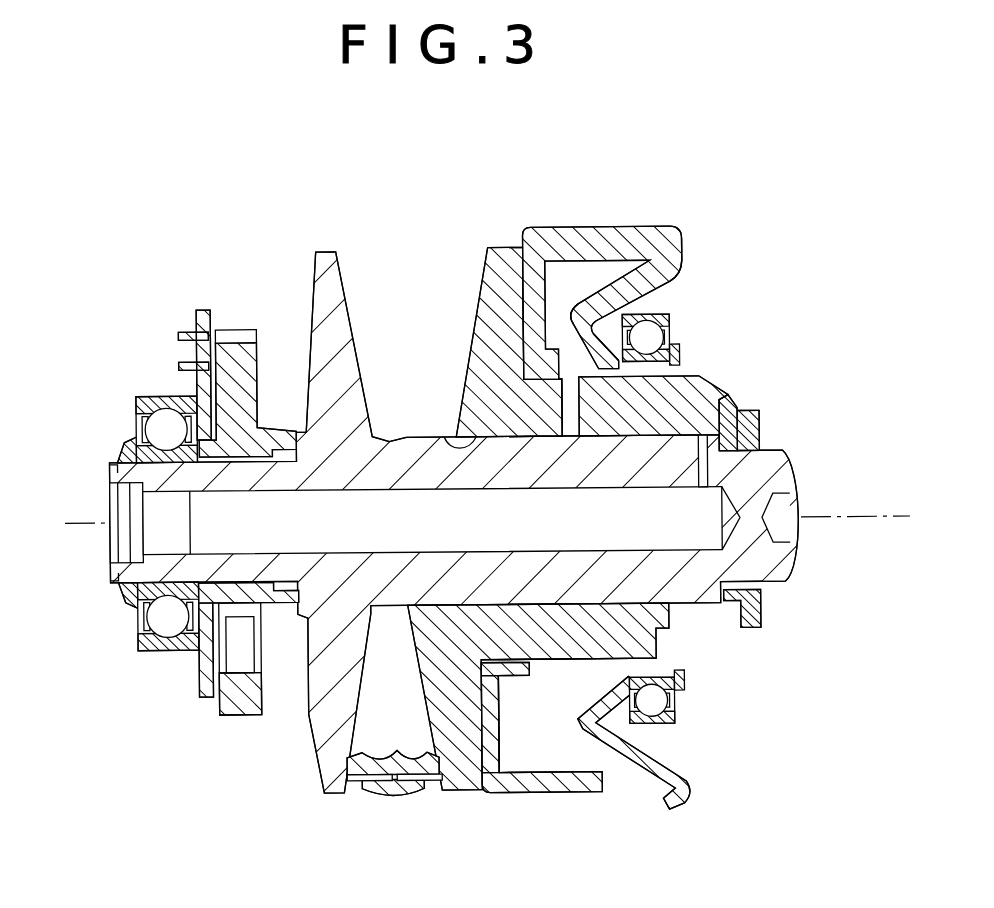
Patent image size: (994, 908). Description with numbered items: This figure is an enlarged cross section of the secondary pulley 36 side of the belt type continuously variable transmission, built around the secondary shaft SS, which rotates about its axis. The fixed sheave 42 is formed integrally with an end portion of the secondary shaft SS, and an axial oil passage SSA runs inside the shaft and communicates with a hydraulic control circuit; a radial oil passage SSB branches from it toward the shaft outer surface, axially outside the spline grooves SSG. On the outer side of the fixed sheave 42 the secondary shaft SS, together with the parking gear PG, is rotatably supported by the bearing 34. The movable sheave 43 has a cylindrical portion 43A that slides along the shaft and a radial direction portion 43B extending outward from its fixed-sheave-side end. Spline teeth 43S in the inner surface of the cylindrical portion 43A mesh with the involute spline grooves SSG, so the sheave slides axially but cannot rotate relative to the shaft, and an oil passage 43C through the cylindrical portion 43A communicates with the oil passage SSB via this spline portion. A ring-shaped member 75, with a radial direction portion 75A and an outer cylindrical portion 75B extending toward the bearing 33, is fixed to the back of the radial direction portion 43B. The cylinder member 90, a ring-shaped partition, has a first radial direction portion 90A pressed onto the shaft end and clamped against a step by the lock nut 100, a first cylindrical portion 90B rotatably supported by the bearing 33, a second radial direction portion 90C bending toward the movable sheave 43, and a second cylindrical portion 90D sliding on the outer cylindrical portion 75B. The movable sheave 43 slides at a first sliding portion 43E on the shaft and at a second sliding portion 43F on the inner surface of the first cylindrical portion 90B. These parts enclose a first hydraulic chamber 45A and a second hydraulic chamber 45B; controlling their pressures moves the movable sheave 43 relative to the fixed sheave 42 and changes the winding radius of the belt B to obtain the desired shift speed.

The fixed sheave 42 is at (305, 716).
The secondary shaft SS is at (752, 471).
The spline teeth 43S is at (755, 533).
The oil passage SSB is at (768, 438).
The spline grooves SSG is at (748, 578).
The lock nut 100 is at (760, 408).
The oil passage SSA is at (133, 600).
The bearing 34 is at (128, 650).
The secondary pulley 36 is at (243, 752).
The parking gear PG is at (237, 343).
The movable sheave 43 is at (468, 284).
The radial direction portion 43B is at (524, 376).
The first sliding portion 43E is at (462, 438).
The oil passage 43C is at (690, 378).
The cylinder member 90 is at (694, 768).
The second radial direction portion 90C is at (591, 308).
The second cylindrical portion 90D is at (645, 260).
The first radial direction portion 90A is at (736, 630).
The first cylindrical portion 90B is at (704, 676).
The bearing 33 is at (679, 320).
The cylindrical portion 43A is at (576, 645).
The second sliding portion 43F is at (610, 665).
The first hydraulic chamber 45A is at (564, 735).
The ring-shaped member 75 is at (522, 816).
The radial direction portion 75A is at (481, 772).
The outer cylindrical portion 75B is at (582, 772).
The second hydraulic chamber 45B is at (714, 646).
The belt B is at (392, 798).